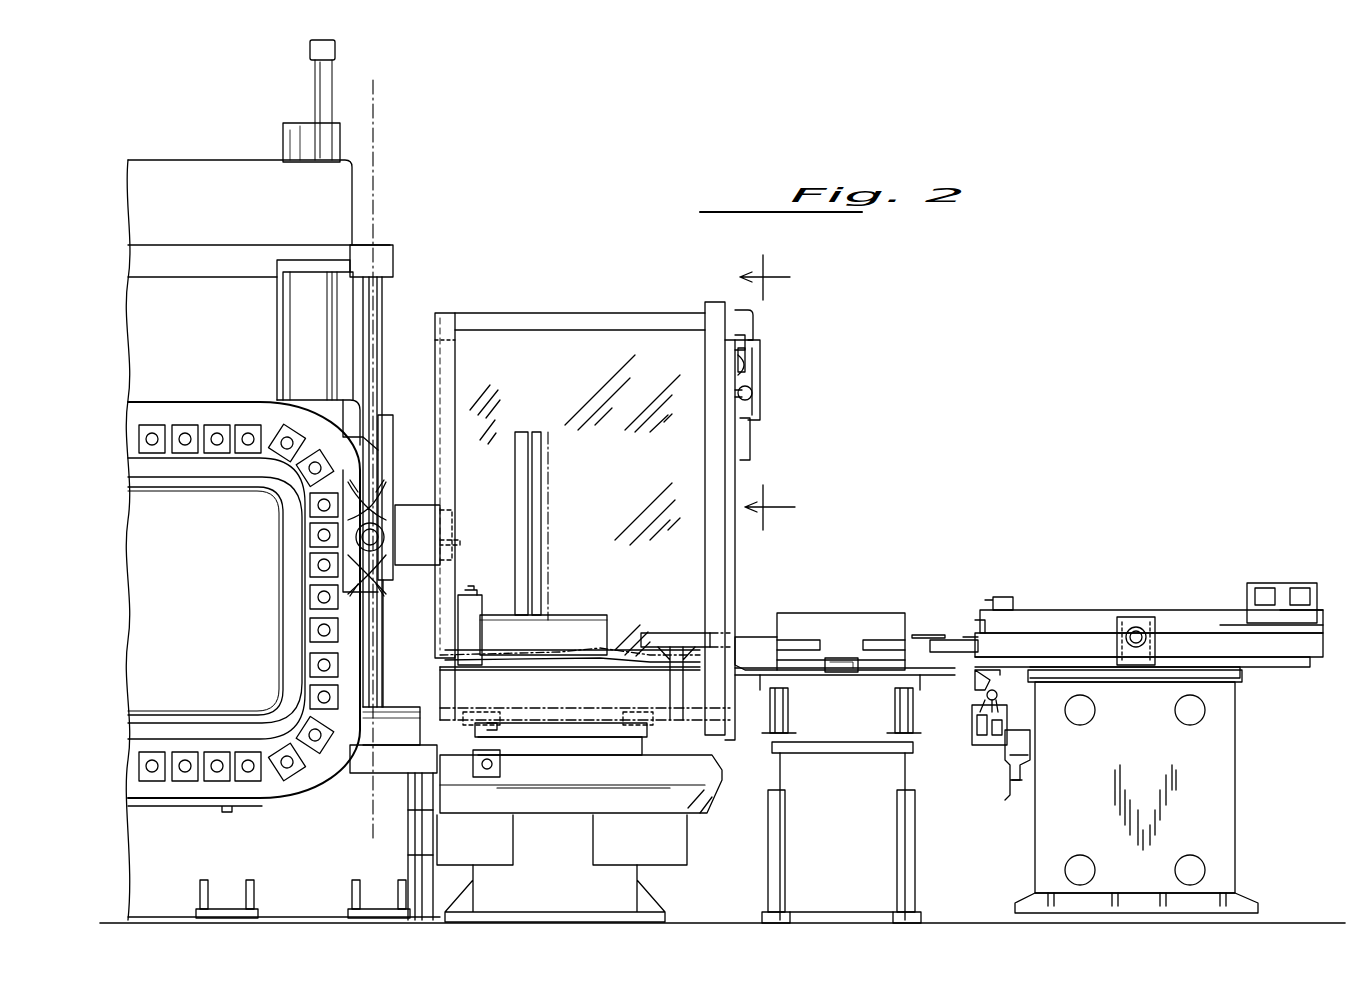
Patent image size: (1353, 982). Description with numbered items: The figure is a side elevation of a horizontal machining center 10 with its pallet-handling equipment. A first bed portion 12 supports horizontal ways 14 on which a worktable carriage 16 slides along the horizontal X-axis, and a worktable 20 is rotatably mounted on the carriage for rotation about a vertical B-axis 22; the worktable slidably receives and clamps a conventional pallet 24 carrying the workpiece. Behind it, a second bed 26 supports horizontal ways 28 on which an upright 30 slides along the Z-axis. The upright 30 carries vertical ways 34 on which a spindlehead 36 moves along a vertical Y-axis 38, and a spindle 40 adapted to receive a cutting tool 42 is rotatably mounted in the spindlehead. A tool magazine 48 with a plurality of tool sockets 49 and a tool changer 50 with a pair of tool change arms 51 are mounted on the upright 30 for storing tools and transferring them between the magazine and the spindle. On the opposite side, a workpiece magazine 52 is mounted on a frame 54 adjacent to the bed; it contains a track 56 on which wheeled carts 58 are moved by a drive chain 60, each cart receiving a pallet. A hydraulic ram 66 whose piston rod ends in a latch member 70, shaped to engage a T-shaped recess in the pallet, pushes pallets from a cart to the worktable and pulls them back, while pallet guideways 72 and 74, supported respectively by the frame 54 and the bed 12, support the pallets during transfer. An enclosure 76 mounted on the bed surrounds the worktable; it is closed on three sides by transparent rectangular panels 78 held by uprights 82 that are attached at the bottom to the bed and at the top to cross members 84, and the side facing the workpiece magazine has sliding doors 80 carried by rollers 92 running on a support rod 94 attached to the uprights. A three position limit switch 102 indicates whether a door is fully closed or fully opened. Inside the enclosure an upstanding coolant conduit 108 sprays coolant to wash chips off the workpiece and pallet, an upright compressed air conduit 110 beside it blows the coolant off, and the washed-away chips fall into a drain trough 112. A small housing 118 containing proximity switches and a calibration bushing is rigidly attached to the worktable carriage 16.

The horizontal machining center 10 is at (421, 211).
The first bed portion 12 is at (568, 846).
The horizontal ways 14 is at (475, 712).
The worktable carriage 16 is at (618, 698).
The worktable 20 is at (558, 655).
The vertical B-axis 22 is at (552, 468).
The pallet 24 is at (570, 615).
The second bed 26 is at (316, 868).
The horizontal ways 28 is at (390, 700).
The upright 30 is at (160, 335).
The vertical ways 34 is at (383, 640).
The spindlehead 36 is at (392, 418).
The vertical Y-axis 38 is at (378, 133).
The spindle 40 is at (448, 513).
The cutting tool 42 is at (455, 545).
The tool magazine 48 is at (238, 513).
The tool sockets 49 is at (228, 416).
The tool changer 50 is at (372, 515).
The tool change arms 51 is at (375, 563).
The workpiece magazine 52 is at (910, 571).
The frame 54 is at (910, 840).
The track 56 is at (880, 725).
The wheeled carts 58 is at (770, 695).
The drive chain 60 is at (840, 658).
The hydraulic ram 66 is at (1075, 615).
The latch member 70 is at (935, 637).
The pallet guideway 72 is at (750, 637).
The pallet guideway 74 is at (670, 633).
The enclosure 76 is at (596, 292).
The transparent rectangular panels 78 is at (668, 394).
The sliding doors 80 is at (757, 466).
The uprights 82 is at (436, 358).
The cross members 84 is at (510, 312).
The rollers 92 is at (755, 380).
The support rod 94 is at (755, 398).
The three position limit switch 102 is at (735, 323).
The upstanding coolant conduit 108 is at (525, 432).
The upright compressed air conduit 110 is at (545, 515).
The drain trough 112 is at (440, 748).
The small housing 118 is at (478, 605).